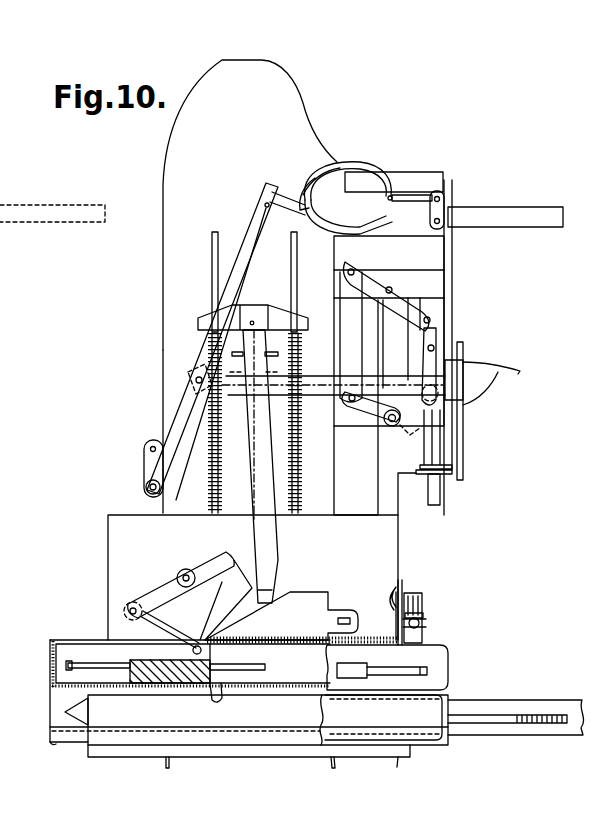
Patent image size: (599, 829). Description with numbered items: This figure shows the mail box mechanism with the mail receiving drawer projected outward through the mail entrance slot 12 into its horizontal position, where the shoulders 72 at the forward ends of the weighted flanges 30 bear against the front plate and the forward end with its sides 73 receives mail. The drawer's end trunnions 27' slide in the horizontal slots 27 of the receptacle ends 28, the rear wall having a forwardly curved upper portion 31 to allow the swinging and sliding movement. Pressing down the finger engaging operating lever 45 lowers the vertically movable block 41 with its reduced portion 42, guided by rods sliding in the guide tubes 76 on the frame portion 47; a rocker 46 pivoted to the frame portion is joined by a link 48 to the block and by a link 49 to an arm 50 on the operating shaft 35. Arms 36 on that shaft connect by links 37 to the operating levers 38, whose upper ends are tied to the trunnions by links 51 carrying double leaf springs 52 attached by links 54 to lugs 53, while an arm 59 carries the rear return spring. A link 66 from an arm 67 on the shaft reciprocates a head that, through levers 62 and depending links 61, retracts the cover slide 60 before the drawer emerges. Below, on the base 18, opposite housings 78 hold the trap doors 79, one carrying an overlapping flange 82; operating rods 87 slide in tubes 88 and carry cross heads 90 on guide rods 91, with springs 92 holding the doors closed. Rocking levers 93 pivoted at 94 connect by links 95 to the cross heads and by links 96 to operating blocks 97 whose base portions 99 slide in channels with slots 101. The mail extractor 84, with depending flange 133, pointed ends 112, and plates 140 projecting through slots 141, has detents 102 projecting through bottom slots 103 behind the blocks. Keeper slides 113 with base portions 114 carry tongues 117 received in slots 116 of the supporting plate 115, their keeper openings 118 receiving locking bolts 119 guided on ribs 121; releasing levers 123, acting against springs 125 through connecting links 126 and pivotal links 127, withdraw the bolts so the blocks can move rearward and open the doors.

The mail entrance slot 12 is at (12, 195).
The base 18 is at (50, 673).
The horizontal slots 27 is at (222, 429).
The end trunnions 27' is at (467, 347).
The receptacle ends 28 is at (250, 205).
The weighted sides or flanges 30 is at (392, 176).
The forwardly curved upper portion 31 is at (200, 86).
The operating shaft 35 is at (385, 432).
The arms 36 is at (263, 424).
The links 37 is at (196, 388).
The operating levers 38 is at (248, 228).
The vertically movable block 41 is at (460, 352).
The reduced portion 42 is at (465, 390).
The finger engaging operating lever 45 is at (496, 374).
The rocker 46 is at (372, 280).
The frame portion 47 is at (400, 339).
The link 48 is at (440, 336).
The link 49 is at (342, 340).
The arm 50 is at (352, 410).
The links 51 is at (350, 228).
The double leaf spring 52 is at (365, 165).
The lugs 53 is at (446, 198).
The links 54 is at (405, 194).
The arm 59 is at (143, 455).
The cover slide 60 is at (12, 233).
The depending links 61 is at (12, 289).
The levers 62 is at (12, 329).
The link 66 is at (20, 410).
The arm 67 is at (12, 419).
The shoulders 72 is at (463, 148).
The sides 73 is at (72, 205).
The guide tubes or cylinders 76 is at (442, 490).
The housings 78 is at (253, 577).
The trap doors 79 is at (300, 767).
The flange 82 is at (165, 763).
The mail extractor 84 is at (249, 720).
The operating rods 87 is at (50, 742).
The tubes 88 is at (246, 508).
The cross head 90 is at (256, 312).
The guide rods 91 is at (210, 263).
The springs 92 is at (288, 466).
The rocking levers 93 is at (150, 596).
The pivot 94 is at (186, 570).
The links 95 is at (280, 556).
The links 96 is at (196, 607).
The operating blocks 97 is at (214, 656).
The base portions 99 is at (154, 691).
The slots 101 is at (78, 661).
The detents 102 is at (218, 696).
The bottom slots 103 is at (292, 692).
The pointed ends 112 is at (62, 708).
The keeper slides 113 is at (305, 594).
The base portions 114 is at (290, 636).
The supporting plate 115 is at (424, 596).
The slots 116 is at (398, 590).
The tongues 117 is at (346, 615).
The keeper openings 118 is at (399, 620).
The locking bolts 119 is at (400, 636).
The ribs 121 is at (424, 623).
The releasing levers 123 is at (398, 672).
The springs 125 is at (335, 658).
The connecting links 126 is at (28, 692).
The pivotal links 127 is at (428, 606).
The depending flange 133 is at (398, 767).
The outwardly projecting plates 140 is at (530, 726).
The slots 141 is at (551, 717).